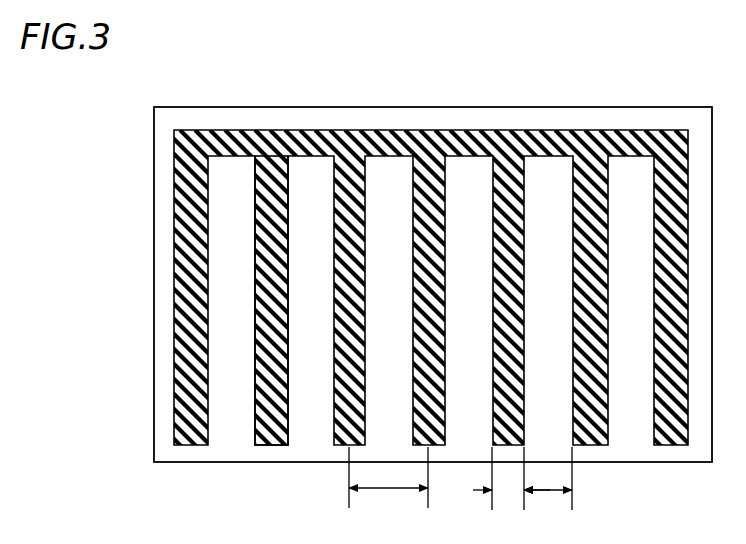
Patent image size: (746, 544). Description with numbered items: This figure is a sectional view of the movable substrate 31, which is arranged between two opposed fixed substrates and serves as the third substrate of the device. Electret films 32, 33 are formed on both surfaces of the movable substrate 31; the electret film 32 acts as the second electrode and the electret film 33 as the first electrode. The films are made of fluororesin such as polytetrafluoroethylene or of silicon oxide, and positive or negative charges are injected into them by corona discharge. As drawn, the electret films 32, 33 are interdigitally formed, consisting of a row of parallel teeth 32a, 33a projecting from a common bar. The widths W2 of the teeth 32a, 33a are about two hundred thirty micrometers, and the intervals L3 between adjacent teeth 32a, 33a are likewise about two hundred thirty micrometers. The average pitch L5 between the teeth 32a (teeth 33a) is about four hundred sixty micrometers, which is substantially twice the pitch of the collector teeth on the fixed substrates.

The movable substrate 31 is at (215, 127).
The electret film 32 is at (373, 250).
The electret film 33 is at (361, 142).
The teeth 32a is at (290, 342).
The teeth 33a is at (268, 441).
The average pitch L5 is at (388, 485).
The width W2 is at (511, 490).
The interval L3 is at (548, 490).